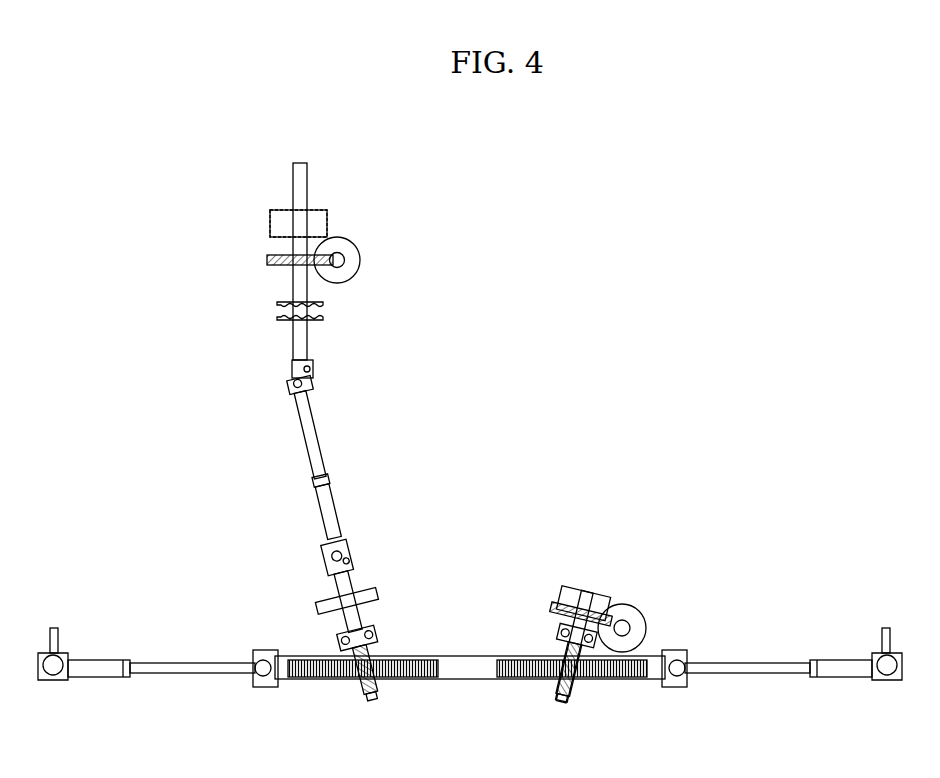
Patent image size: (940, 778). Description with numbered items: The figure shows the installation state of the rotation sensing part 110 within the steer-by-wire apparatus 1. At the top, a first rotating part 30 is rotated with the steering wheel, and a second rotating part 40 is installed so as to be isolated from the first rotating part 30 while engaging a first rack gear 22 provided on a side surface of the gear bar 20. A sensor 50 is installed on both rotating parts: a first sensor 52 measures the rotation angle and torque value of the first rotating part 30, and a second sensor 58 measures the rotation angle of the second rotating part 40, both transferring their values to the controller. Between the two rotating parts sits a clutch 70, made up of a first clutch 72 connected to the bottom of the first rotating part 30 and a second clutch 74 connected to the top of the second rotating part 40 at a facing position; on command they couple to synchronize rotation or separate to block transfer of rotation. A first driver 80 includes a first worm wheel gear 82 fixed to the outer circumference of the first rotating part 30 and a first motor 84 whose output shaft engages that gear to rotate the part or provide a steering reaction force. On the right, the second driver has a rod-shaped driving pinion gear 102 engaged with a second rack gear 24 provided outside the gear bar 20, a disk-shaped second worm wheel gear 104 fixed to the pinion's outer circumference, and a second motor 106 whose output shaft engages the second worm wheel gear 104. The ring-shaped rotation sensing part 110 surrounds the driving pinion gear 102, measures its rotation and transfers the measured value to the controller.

The steer-by-wire apparatus 1 is at (514, 261).
The gear bar 20 is at (472, 683).
The first rack gear 22 is at (411, 680).
The second rack gear 24 is at (533, 680).
The first rotating part 30 is at (319, 179).
The second rotating part 40 is at (344, 415).
The sensor 50 is at (253, 203).
The first sensor 52 is at (267, 228).
The second sensor 58 is at (389, 582).
The clutch 70 is at (343, 313).
The first clutch 72 is at (323, 304).
The second clutch 74 is at (325, 328).
The first driver 80 is at (352, 232).
The first worm wheel gear 82 is at (318, 253).
The first motor 84 is at (357, 249).
The driving pinion gear 102 is at (577, 674).
The second worm wheel gear 104 is at (552, 610).
The second motor 106 is at (640, 605).
The rotation sensing part 110 is at (565, 592).